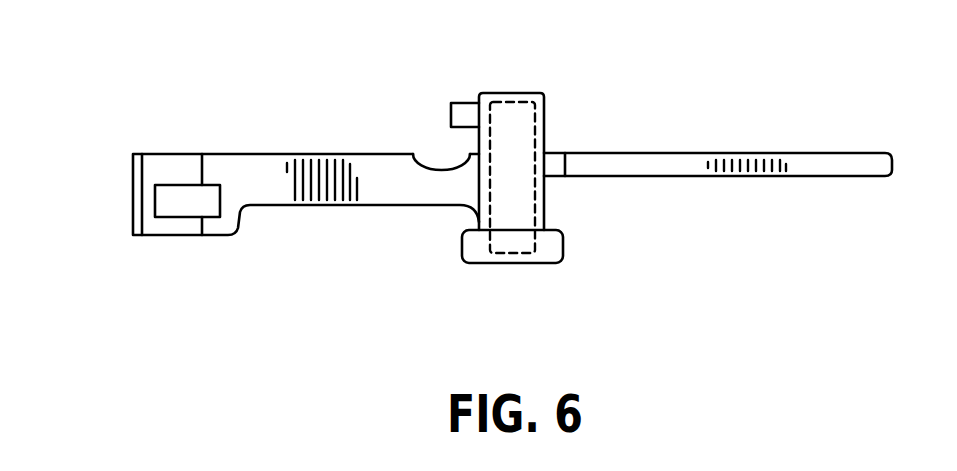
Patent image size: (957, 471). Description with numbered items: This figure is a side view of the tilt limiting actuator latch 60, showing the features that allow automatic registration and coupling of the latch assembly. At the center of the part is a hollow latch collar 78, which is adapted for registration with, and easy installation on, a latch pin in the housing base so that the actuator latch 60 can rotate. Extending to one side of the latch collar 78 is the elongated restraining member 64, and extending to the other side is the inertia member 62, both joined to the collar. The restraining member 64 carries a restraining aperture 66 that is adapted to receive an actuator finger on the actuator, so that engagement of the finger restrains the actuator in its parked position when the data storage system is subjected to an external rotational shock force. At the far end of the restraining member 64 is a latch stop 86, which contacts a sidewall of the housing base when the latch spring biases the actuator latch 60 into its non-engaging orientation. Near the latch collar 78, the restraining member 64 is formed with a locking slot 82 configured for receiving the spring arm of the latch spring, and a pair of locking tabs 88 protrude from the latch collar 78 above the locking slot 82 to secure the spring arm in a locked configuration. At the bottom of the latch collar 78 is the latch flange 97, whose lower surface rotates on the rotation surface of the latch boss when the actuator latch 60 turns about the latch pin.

The actuator latch 60 is at (148, 85).
The inertia member 62 is at (817, 152).
The elongated restraining member 64 is at (284, 154).
The restraining aperture 66 is at (176, 203).
The latch collar 78 is at (548, 120).
The locking slot 82 is at (433, 133).
The latch stop 86 is at (136, 190).
The locking tabs 88 is at (468, 104).
The latch flange 97 is at (470, 252).